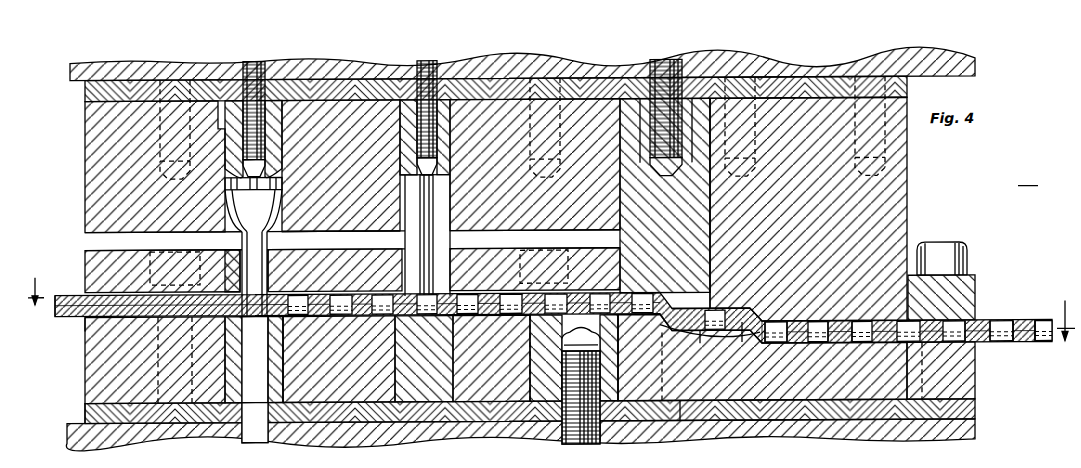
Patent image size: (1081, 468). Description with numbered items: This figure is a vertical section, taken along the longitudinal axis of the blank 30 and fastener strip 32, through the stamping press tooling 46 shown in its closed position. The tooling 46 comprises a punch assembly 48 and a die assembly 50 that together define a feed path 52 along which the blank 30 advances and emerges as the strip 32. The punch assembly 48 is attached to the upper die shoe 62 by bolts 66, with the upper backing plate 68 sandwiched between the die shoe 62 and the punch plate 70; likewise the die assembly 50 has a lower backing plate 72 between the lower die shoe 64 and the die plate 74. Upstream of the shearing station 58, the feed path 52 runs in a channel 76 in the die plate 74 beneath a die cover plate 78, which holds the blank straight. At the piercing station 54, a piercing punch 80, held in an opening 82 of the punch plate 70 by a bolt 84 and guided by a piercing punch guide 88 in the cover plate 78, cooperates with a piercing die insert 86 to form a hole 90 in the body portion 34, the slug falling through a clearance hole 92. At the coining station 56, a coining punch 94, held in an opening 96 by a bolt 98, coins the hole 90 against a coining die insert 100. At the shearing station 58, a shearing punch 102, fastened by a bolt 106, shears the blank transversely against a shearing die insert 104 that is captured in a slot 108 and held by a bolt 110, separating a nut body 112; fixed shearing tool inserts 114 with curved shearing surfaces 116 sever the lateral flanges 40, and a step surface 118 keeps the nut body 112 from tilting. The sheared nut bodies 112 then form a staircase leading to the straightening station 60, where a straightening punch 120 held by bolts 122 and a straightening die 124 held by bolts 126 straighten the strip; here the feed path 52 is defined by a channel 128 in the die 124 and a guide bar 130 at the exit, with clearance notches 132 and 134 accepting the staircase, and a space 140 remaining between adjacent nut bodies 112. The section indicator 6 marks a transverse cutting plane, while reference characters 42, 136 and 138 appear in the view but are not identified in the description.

The section line 6- 6 is at (550, 298).
The blank 30 is at (70, 293).
The fastener strip 32 is at (1022, 284).
The body portion 34 is at (79, 296).
The lateral flange 40 is at (72, 330).
The strip edge 42 is at (63, 318).
The tooling 46 is at (1002, 184).
The punch assembly 48 is at (136, 167).
The die assembly 50 is at (84, 372).
The feed path 52 is at (354, 298).
The piercing station 54 is at (293, 212).
The coining station 56 is at (466, 222).
The shearing station 58 is at (617, 225).
The straightening station 60 is at (958, 250).
The upper die shoe 62 is at (72, 70).
The lower die shoe 64 is at (70, 447).
The bolts 66 is at (160, 72).
The upper backing plate 68 is at (86, 96).
The punch plate 70 is at (86, 184).
The lower backing plate 72 is at (86, 421).
The die plate 74 is at (86, 397).
The channel 76 is at (297, 320).
The die cover plate 78 is at (334, 248).
The piercing punch 80 is at (278, 144).
The opening 82 is at (228, 210).
The bolt 84 is at (253, 63).
The piercing die insert 86 is at (280, 384).
The piercing punch guide 88 is at (282, 243).
The hole 90 is at (350, 311).
The clearance hole 92 is at (259, 446).
The coining punch 94 is at (406, 180).
The opening 96 is at (412, 199).
The bolt 98 is at (425, 63).
The coining die insert 100 is at (405, 371).
The shearing punch 102 is at (708, 218).
The shearing die insert 104 is at (607, 425).
The bolt 106 is at (672, 63).
The slot 108 is at (546, 360).
The bolt 110 is at (576, 448).
The nut body 112 is at (714, 312).
The fixed shearing tool inserts 114 is at (677, 405).
The shearing surfaces 116 is at (639, 320).
The step surface 118 is at (622, 358).
The straightening punch 120 is at (905, 170).
The bolts 122 is at (753, 68).
The straightening die 124 is at (976, 396).
The bolts 126 is at (937, 248).
The channel 128 is at (863, 349).
The guide bar 130 is at (962, 273).
The clearance notch 132 is at (747, 308).
The clearance notch 134 is at (690, 336).
The strip support 136 is at (813, 349).
The step 138 is at (740, 348).
The space 140 is at (809, 324).